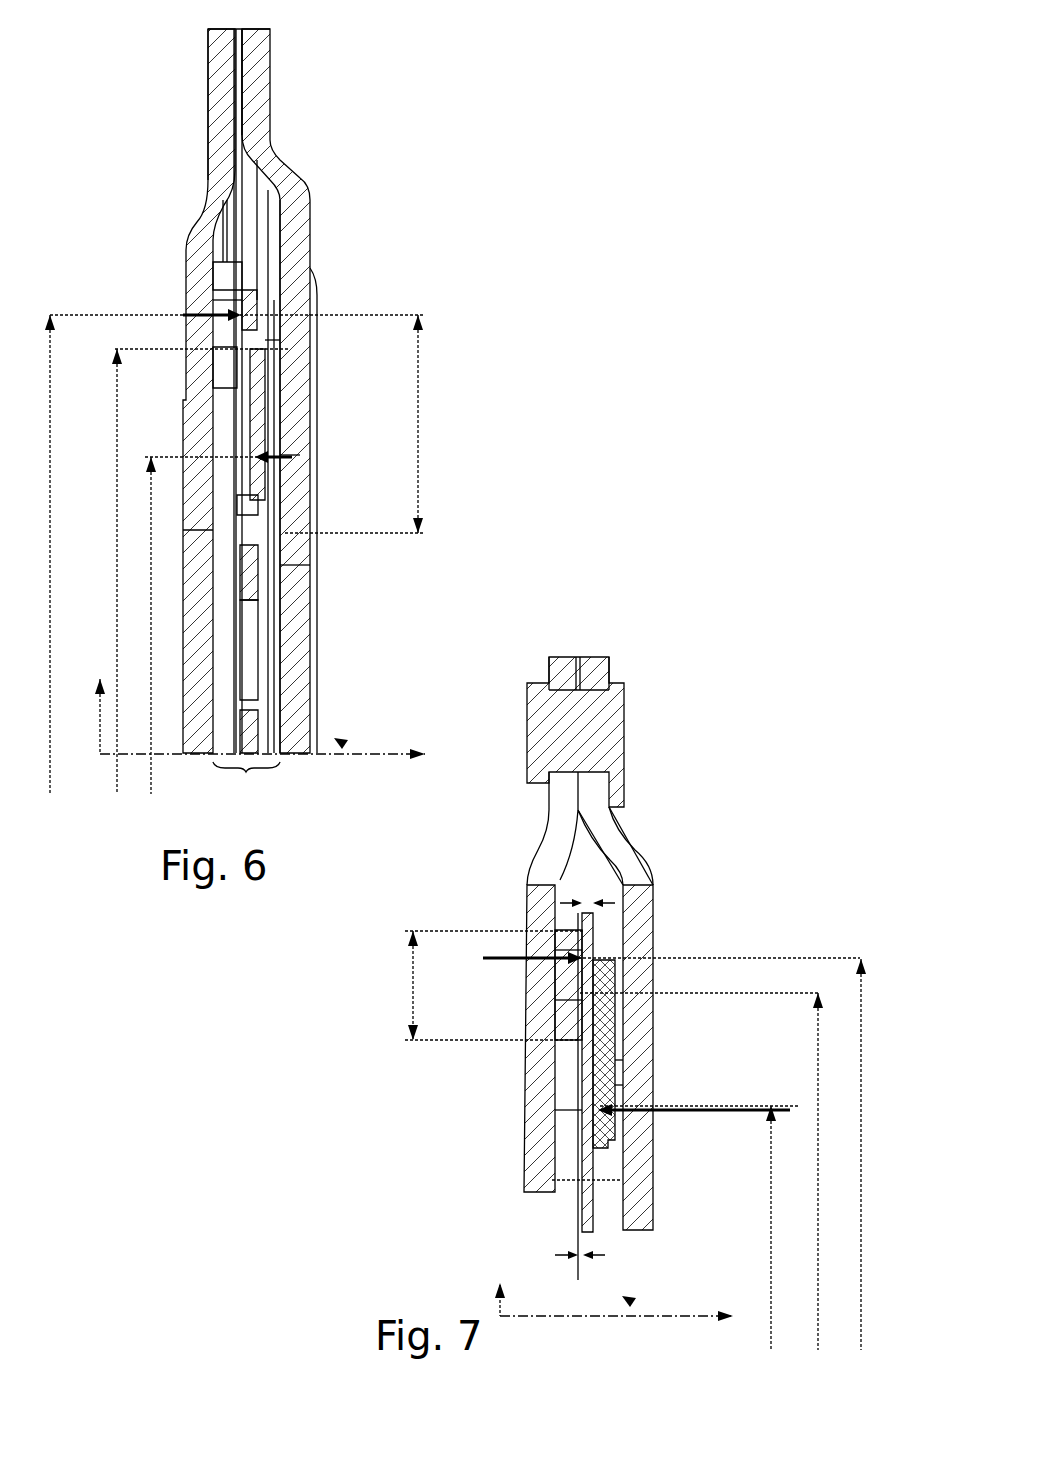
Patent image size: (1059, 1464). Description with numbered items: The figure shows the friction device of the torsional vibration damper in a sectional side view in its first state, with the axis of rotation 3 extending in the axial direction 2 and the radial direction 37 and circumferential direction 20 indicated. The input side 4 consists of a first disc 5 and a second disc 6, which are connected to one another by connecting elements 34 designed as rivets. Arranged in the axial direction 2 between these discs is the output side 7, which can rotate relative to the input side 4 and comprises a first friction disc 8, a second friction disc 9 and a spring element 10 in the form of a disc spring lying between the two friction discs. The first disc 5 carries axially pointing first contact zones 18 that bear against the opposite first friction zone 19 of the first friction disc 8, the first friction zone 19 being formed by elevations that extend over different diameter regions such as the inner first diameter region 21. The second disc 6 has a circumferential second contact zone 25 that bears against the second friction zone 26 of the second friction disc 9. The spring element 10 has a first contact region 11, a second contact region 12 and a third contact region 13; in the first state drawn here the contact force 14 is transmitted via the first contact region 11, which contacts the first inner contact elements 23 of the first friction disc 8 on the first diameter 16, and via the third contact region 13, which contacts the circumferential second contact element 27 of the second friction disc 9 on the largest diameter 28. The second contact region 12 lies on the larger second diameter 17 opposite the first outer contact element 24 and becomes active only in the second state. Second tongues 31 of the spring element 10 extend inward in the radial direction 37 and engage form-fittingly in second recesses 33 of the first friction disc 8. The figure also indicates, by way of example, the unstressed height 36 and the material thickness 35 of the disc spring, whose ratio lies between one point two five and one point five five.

In FIG. 6, the axial direction 2 is at (405, 755).
In FIG. 7, the axial direction 2 is at (718, 1318).
In FIG. 6, the axis of rotation 3 is at (395, 760).
In FIG. 7, the axis of rotation 3 is at (700, 1322).
In FIG. 6, the input side 4 is at (240, 78).
In FIG. 7, the input side 4 is at (580, 668).
In FIG. 6, the first disc 5 is at (255, 118).
In FIG. 7, the first disc 5 is at (595, 670).
In FIG. 6, the second disc 6 is at (220, 95).
In FIG. 7, the second disc 6 is at (565, 670).
In FIG. 6, the output side 7 is at (246, 772).
In FIG. 7, the output side 7 is at (580, 1195).
In FIG. 6, the first friction disc 8 is at (265, 350).
In FIG. 7, the first friction disc 8 is at (612, 995).
In FIG. 6, the second friction disc 9 is at (240, 300).
In FIG. 7, the second friction disc 9 is at (570, 955).
In FIG. 6, the spring element 10 is at (275, 262).
In FIG. 7, the spring element 10 is at (600, 898).
In FIG. 6, the first contact region 11 is at (265, 455).
In FIG. 7, the first contact region 11 is at (615, 1095).
In FIG. 6, the second contact region 12 is at (300, 300).
In FIG. 7, the second contact region 12 is at (650, 940).
In FIG. 6, the third contact region 13 is at (215, 275).
In FIG. 7, the third contact region 13 is at (565, 935).
In FIG. 6, the contact force 14 is at (200, 315).
In FIG. 7, the contact force 14 is at (483, 962).
In FIG. 6, the first diameter 16 is at (202, 625).
In FIG. 7, the first diameter 16 is at (771, 1232).
In FIG. 6, the second diameter 17 is at (185, 571).
In FIG. 7, the second diameter 17 is at (818, 1165).
In FIG. 6, the first contact zones 18 is at (420, 345).
In FIG. 7, the first contact zones 18 is at (582, 1075).
In FIG. 6, the first friction zone 19 is at (282, 460).
In FIG. 7, the first friction zone 19 is at (620, 1090).
In FIG. 6, the circumferential direction 20 is at (345, 740).
In FIG. 7, the circumferential direction 20 is at (632, 1303).
In FIG. 6, the first diameter region 21 is at (403, 172).
In FIG. 7, the first diameter region 21 is at (738, 717).
In FIG. 6, the first inner contact elements 23 is at (245, 500).
In FIG. 7, the first inner contact elements 23 is at (582, 1140).
In FIG. 7, the first outer contact element 24 is at (582, 990).
In FIG. 6, the second contact zone 25 is at (260, 220).
In FIG. 7, the second contact zone 25 is at (605, 950).
In FIG. 6, the second friction zone 26 is at (245, 328).
In FIG. 7, the second friction zone 26 is at (582, 970).
In FIG. 6, the second contact element 27 is at (280, 290).
In FIG. 7, the second contact element 27 is at (615, 918).
In FIG. 6, the largest diameter 28 is at (35, 554).
In FIG. 7, the largest diameter 28 is at (862, 1015).
In FIG. 6, the second tongues 31 is at (258, 545).
In FIG. 6, the second recesses 33 is at (258, 612).
In FIG. 7, the connecting elements 34 is at (595, 730).
In FIG. 7, the material thickness 35 is at (600, 875).
In FIG. 7, the unstressed height 36 is at (580, 1262).
In FIG. 6, the radial direction 37 is at (92, 700).
In FIG. 7, the radial direction 37 is at (485, 1289).